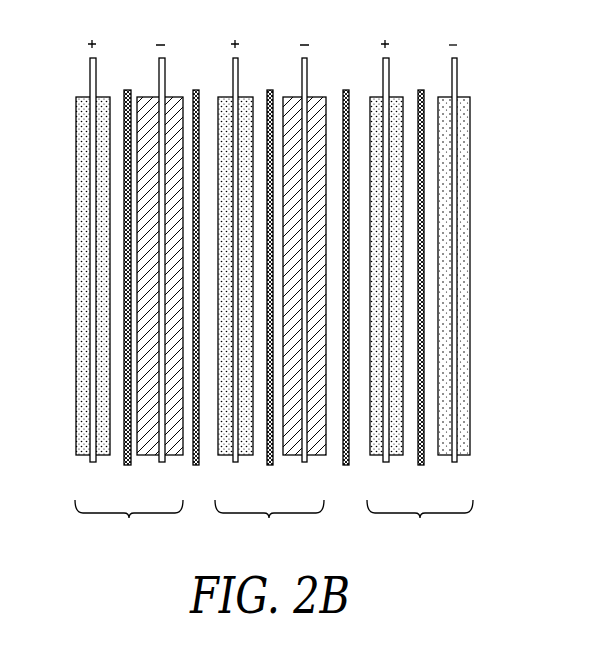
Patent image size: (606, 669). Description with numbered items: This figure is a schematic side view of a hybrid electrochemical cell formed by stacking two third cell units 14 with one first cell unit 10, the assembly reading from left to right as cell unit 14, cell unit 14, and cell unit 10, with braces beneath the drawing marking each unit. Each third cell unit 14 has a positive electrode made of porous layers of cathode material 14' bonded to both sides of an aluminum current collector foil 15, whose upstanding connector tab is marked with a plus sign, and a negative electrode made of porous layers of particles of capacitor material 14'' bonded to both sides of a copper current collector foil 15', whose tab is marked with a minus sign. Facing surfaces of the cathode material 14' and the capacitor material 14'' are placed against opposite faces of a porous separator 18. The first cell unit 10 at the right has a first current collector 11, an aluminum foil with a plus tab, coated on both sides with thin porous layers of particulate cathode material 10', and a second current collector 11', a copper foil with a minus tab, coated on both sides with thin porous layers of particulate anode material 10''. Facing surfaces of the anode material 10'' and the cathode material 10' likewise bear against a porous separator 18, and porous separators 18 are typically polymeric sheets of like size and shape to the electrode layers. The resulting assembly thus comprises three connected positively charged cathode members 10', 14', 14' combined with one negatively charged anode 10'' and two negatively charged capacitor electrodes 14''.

The first cell unit 10 is at (420, 528).
The cathode material 10' is at (447, 276).
The anode material 10'' is at (484, 276).
The first current collector 11 is at (372, 236).
The second current collector 11' is at (445, 236).
The third cell unit 14 is at (199, 528).
The cathode material 14' is at (138, 297).
The capacitor material 14'' is at (174, 297).
The current collector foil 15 is at (150, 236).
The copper current collector foil 15' is at (219, 236).
The porous separator 18 is at (127, 90).